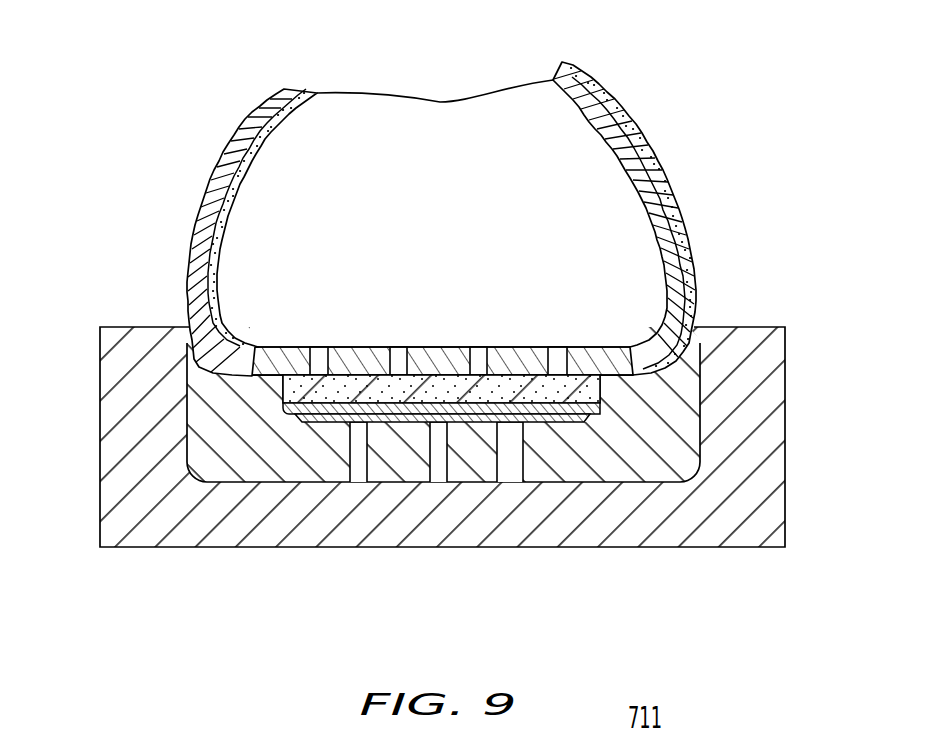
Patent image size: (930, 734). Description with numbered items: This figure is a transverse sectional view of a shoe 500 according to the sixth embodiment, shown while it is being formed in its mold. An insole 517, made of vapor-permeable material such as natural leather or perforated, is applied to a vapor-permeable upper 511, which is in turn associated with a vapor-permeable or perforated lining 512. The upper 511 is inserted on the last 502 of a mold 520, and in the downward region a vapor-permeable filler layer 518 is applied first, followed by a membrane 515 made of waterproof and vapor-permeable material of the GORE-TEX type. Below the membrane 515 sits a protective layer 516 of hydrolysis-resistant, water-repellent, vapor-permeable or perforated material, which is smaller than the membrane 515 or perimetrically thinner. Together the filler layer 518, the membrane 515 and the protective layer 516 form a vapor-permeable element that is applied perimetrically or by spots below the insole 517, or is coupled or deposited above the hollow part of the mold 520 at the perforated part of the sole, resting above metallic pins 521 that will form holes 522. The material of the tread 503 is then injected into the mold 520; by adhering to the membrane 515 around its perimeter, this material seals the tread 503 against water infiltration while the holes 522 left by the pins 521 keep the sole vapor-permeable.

The shoe 500 is at (633, 96).
The last 502 is at (448, 117).
The tread 503 is at (217, 462).
The upper 511 is at (248, 128).
The lining 512 is at (251, 160).
The membrane 515 is at (480, 409).
The protective layer 516 is at (440, 423).
The insole 517 is at (512, 346).
The filler layer 518 is at (578, 384).
The mold 520 is at (783, 456).
The metallic pins 521 is at (513, 470).
The holes 522 is at (357, 450).